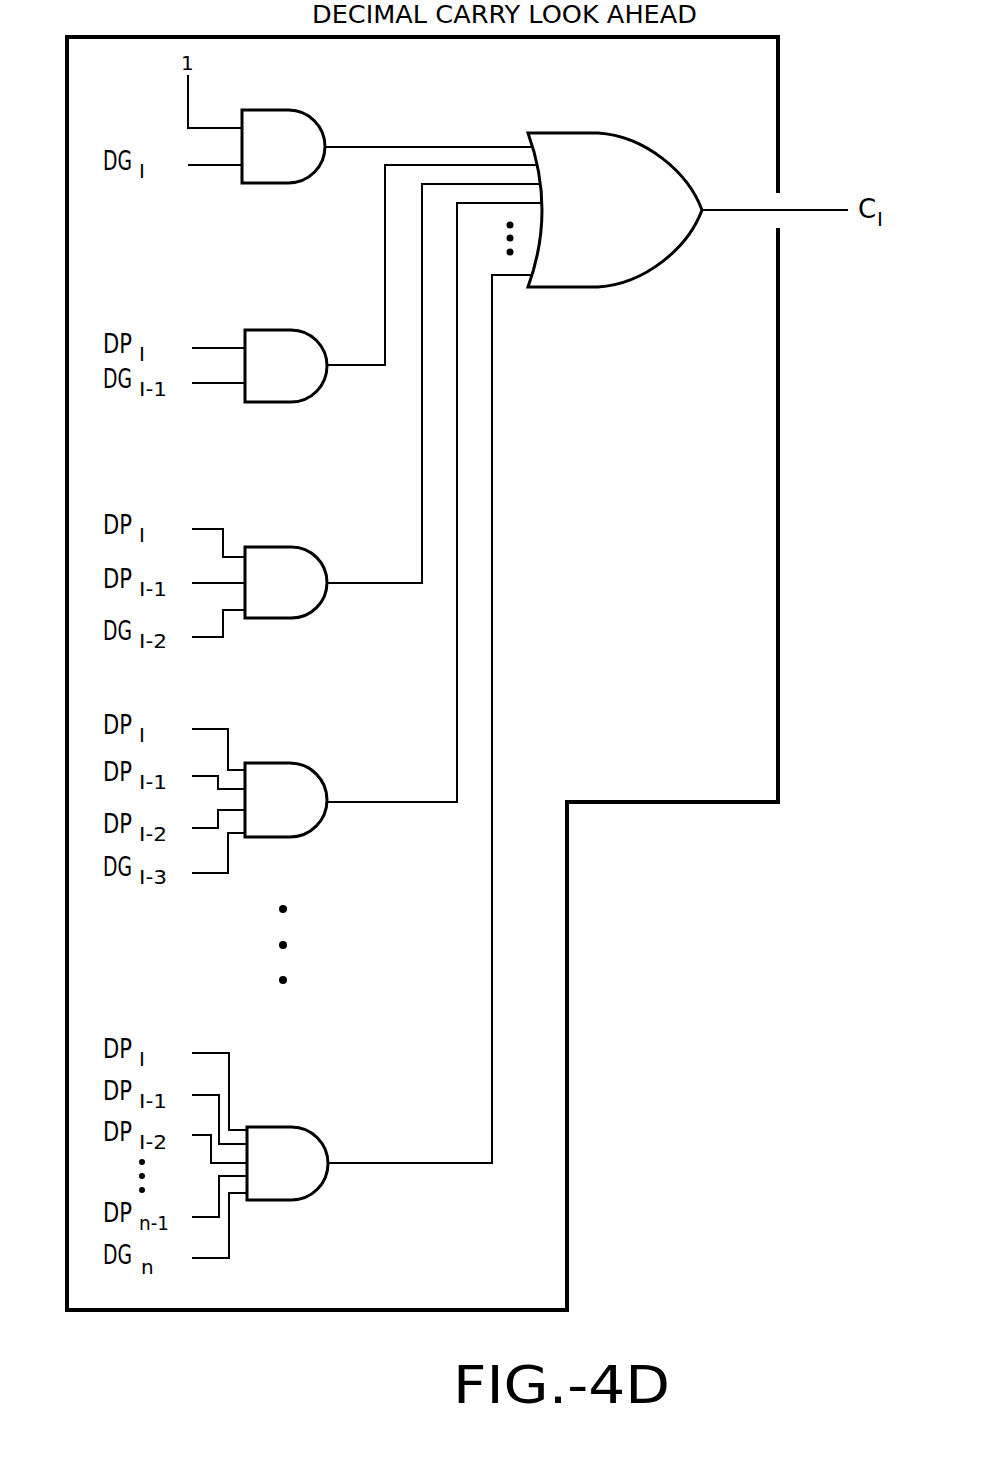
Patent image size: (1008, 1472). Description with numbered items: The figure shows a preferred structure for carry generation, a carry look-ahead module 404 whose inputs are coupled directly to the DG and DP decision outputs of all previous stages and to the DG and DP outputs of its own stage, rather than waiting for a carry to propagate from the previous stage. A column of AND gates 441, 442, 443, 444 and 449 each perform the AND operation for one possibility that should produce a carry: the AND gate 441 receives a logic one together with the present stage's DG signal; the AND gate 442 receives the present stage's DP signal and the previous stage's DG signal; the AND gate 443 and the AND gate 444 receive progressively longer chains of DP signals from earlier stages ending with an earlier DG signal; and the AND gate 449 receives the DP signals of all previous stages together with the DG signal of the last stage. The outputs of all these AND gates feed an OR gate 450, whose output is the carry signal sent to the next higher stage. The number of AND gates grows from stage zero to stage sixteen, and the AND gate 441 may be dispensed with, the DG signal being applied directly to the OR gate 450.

The carry look-ahead module 404 is at (780, 692).
The AND gate 441 is at (387, 146).
The AND gate 442 is at (391, 283).
The AND gate 443 is at (392, 401).
The AND gate 444 is at (393, 520).
The AND gate 449 is at (389, 737).
The OR gate 450 is at (688, 210).